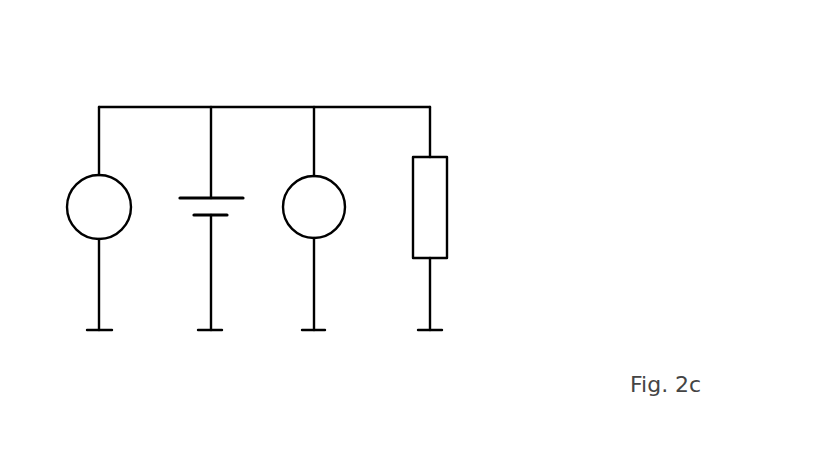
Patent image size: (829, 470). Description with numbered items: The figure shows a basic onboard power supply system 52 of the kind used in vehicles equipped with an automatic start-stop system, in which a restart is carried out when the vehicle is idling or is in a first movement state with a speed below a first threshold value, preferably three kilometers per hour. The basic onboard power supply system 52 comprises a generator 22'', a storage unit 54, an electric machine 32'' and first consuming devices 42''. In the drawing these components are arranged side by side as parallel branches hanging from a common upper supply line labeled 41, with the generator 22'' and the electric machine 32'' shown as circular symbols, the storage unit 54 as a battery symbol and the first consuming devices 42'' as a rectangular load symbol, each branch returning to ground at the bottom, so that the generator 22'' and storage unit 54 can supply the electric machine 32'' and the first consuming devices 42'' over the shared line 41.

The supply line / common node 41 is at (264, 90).
The basic onboard power supply system 52 is at (388, 90).
The generator 22'' is at (86, 218).
The electric machine 32'' is at (330, 218).
The first consuming devices 42'' is at (452, 218).
The storage unit 54 is at (220, 227).